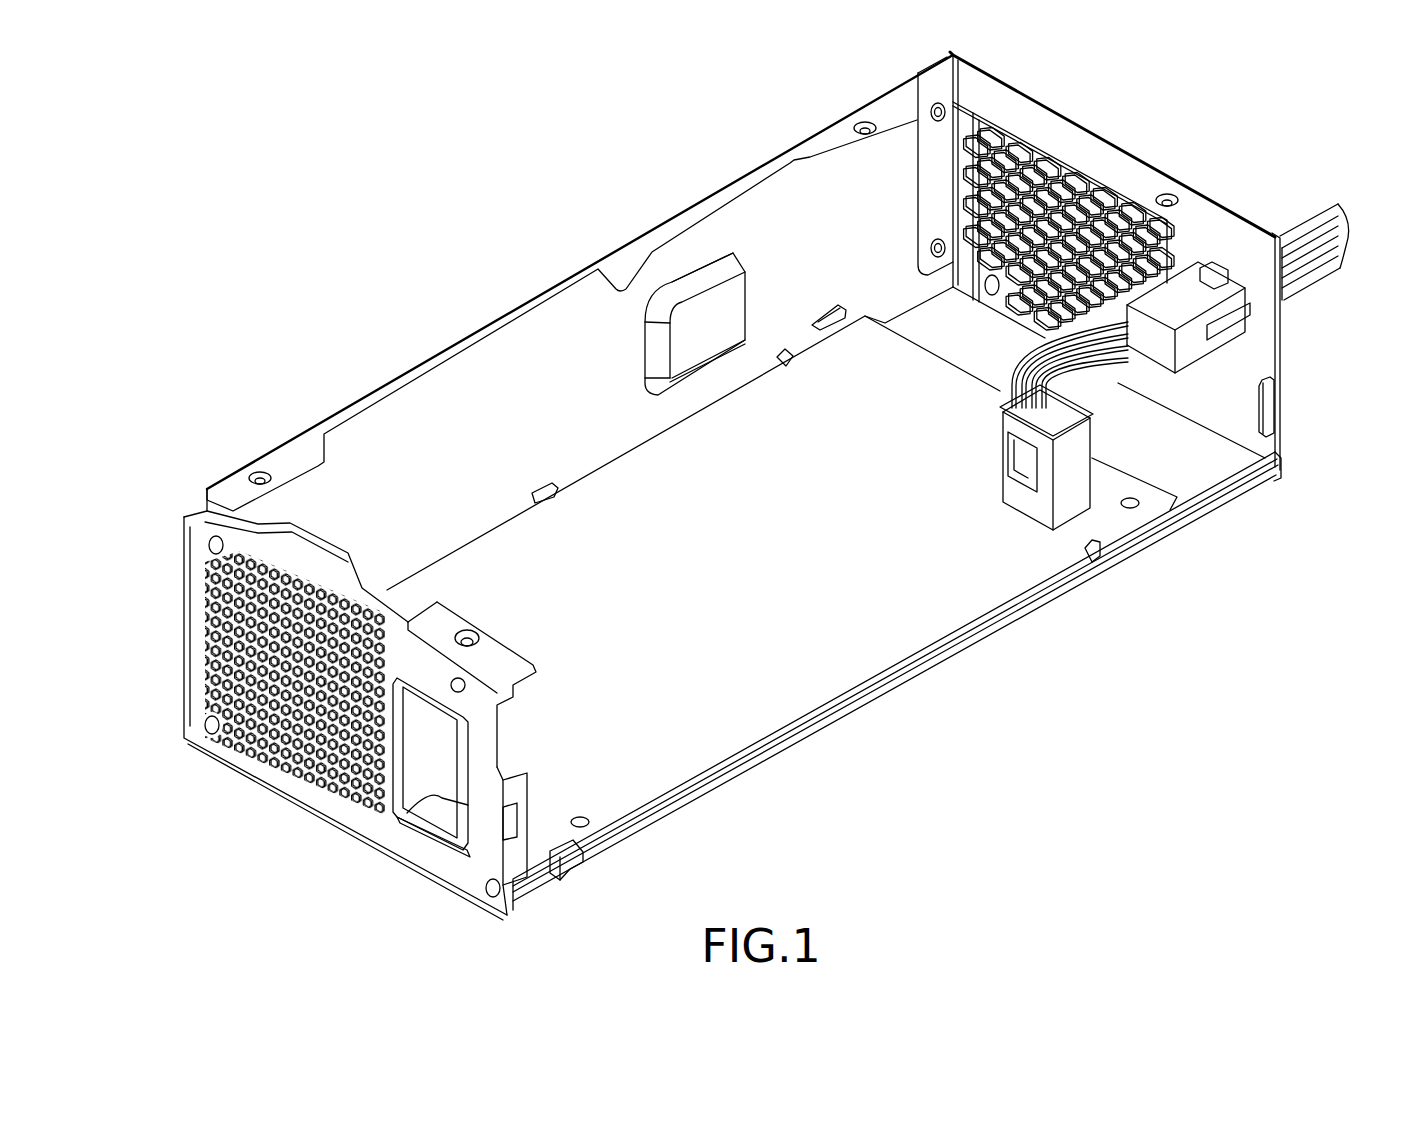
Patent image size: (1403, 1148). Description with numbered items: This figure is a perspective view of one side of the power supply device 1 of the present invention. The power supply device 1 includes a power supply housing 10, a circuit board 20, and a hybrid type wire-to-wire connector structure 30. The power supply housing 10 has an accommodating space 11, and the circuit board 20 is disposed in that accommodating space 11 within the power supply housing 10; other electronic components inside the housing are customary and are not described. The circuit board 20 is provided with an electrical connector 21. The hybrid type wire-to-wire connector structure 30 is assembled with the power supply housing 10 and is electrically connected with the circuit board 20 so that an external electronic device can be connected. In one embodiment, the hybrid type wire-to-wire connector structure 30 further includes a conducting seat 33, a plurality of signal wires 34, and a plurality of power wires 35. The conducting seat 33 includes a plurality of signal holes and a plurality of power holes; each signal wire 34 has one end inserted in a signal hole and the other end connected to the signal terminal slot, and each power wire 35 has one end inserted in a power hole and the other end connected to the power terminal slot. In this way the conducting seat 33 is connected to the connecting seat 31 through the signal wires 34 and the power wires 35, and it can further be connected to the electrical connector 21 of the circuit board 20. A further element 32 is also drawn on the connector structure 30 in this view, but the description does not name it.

The power supply device 1 is at (753, 65).
The power supply housing 10 is at (540, 347).
The accommodating space 11 is at (497, 397).
The circuit board 20 is at (897, 620).
The electrical connector 21 is at (1073, 490).
The hybrid type wire-to-wire connector structure 30 is at (1170, 425).
The connecting seat 31 is at (1268, 386).
The guide rail 32 is at (1283, 303).
The conducting seat 33 is at (1070, 450).
The signal wires 34 is at (1085, 391).
The power wires 35 is at (1027, 362).